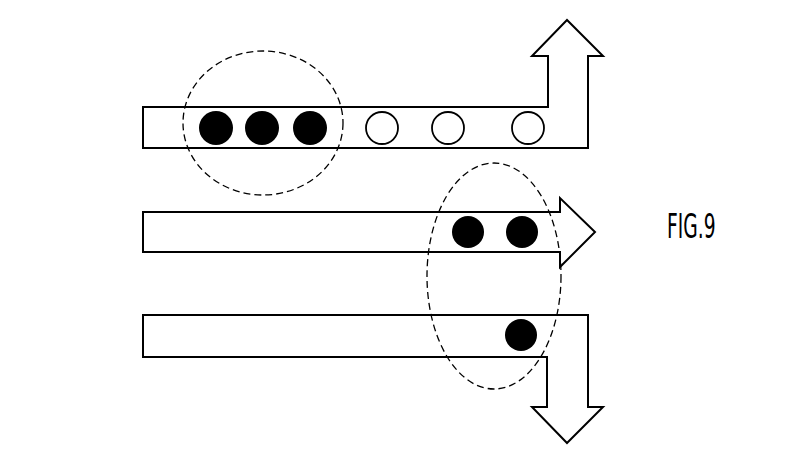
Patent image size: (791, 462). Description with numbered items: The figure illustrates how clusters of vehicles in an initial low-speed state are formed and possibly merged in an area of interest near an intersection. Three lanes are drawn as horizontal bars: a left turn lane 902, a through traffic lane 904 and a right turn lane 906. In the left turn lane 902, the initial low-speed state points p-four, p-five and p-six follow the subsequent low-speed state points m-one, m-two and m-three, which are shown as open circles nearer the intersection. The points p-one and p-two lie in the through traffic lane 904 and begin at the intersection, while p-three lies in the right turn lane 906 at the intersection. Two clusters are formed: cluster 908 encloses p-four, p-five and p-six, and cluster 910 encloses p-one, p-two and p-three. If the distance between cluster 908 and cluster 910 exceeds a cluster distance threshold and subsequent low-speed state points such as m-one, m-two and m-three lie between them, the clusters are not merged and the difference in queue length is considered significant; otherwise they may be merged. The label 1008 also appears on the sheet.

The left turn lane 902 is at (143, 128).
The through traffic lane 904 is at (143, 233).
The right turn lane 906 is at (143, 338).
The cluster 908 is at (233, 51).
The cluster 910 is at (562, 295).
The parking lot diagram 1008 is at (442, 461).